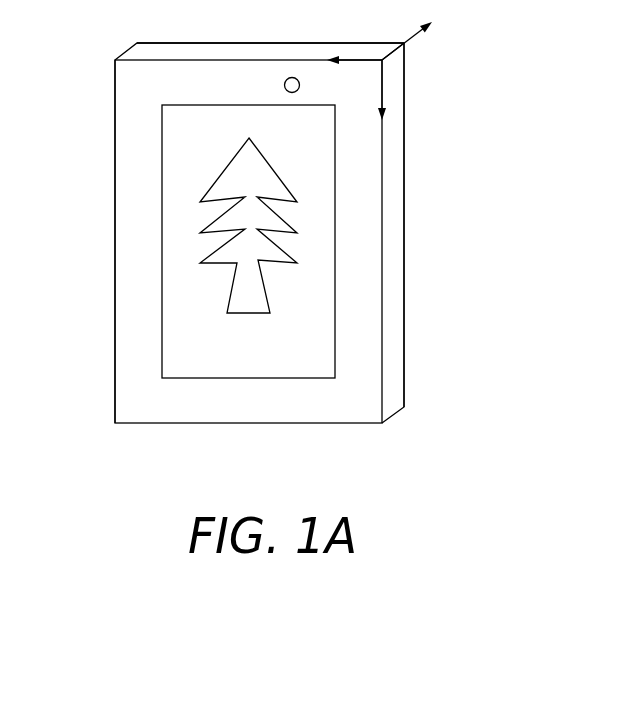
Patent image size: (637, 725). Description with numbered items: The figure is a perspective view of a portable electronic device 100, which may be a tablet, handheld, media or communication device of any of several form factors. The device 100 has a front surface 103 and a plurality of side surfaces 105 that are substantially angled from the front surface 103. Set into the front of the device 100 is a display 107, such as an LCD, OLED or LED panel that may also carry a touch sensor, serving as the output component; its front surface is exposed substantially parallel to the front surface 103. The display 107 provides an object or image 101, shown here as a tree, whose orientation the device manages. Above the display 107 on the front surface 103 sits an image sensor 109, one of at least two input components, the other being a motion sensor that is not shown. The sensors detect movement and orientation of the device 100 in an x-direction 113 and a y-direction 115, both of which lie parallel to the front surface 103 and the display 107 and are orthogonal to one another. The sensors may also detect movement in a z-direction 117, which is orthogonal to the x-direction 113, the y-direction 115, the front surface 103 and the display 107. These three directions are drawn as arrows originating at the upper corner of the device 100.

The portable electronic device 100 is at (415, 226).
The object or image 101 is at (235, 180).
The front surface 103 is at (125, 279).
The side surfaces 105 is at (269, 56).
The display 107 is at (317, 356).
The image sensor 109 is at (284, 85).
The x-direction 113 is at (383, 90).
The y-direction 115 is at (366, 58).
The z-direction 117 is at (411, 45).